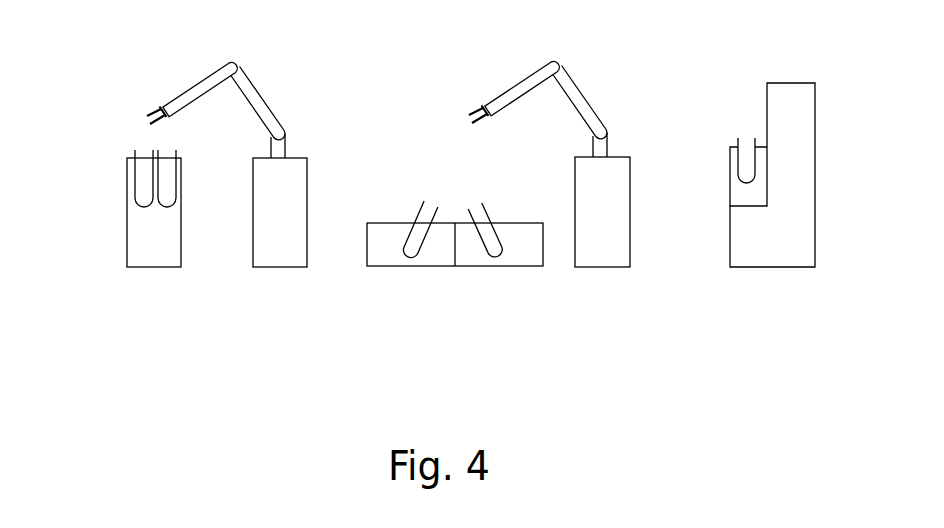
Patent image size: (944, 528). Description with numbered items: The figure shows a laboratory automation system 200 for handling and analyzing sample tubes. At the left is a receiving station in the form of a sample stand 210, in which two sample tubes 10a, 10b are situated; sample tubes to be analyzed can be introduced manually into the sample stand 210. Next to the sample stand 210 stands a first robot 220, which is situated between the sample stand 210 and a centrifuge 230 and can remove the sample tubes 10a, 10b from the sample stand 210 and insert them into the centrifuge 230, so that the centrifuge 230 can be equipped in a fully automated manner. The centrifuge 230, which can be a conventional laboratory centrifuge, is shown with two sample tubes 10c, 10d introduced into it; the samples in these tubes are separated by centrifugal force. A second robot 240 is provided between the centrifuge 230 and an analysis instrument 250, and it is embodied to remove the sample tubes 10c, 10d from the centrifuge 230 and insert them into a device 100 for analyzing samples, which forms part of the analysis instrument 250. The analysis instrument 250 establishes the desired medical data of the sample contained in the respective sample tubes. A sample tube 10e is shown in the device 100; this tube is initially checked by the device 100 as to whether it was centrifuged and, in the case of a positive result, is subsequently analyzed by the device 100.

The laboratory automation system 200 is at (190, 317).
The sample stand 210 is at (130, 238).
The first robot 220 is at (265, 238).
The centrifuge 230 is at (385, 256).
The second robot 240 is at (607, 254).
The analysis instrument 250 is at (778, 255).
The device for analyzing samples 100 is at (738, 197).
The sample tube 10a is at (134, 152).
The sample tube 10b is at (177, 157).
The sample tube 10c is at (420, 212).
The sample tube 10d is at (488, 213).
The sample tube 10e is at (738, 142).